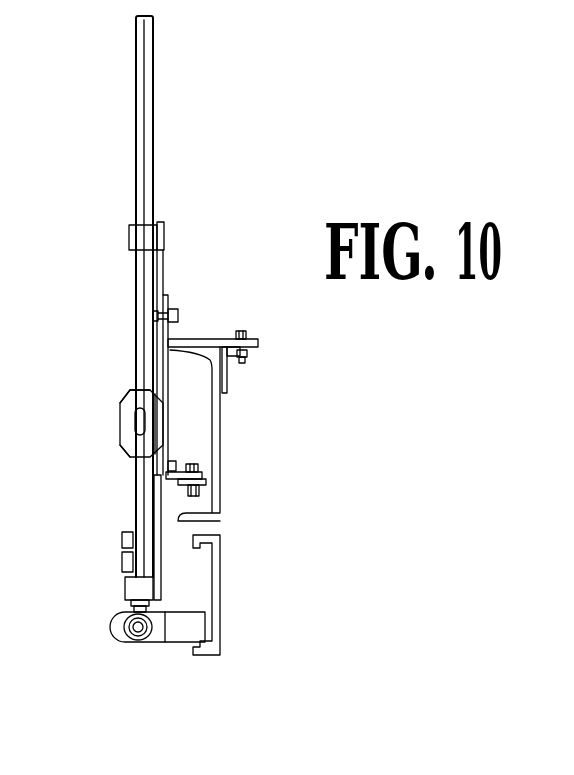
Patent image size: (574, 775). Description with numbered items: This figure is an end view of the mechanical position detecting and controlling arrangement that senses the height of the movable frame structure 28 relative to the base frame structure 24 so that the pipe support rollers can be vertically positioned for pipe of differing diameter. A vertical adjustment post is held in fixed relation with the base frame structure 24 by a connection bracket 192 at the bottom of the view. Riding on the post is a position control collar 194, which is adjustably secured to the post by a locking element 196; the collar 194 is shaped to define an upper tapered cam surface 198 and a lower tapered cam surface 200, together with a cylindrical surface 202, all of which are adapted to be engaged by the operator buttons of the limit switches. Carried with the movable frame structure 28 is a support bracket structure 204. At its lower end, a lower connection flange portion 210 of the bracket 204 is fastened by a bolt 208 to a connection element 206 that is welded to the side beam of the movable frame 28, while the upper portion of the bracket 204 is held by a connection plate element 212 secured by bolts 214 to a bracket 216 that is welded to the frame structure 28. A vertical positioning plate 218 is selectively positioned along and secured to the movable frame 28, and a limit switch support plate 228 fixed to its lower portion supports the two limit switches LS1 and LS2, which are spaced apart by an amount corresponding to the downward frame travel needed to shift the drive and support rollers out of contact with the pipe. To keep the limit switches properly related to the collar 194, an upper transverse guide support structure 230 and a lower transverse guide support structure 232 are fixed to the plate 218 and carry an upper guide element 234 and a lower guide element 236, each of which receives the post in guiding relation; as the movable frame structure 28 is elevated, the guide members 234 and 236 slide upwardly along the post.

The base frame structure 24 is at (221, 566).
The movable frame structure 28 is at (221, 436).
The connection bracket 192 is at (176, 640).
The position control collar 194 is at (120, 437).
The locking element 196 is at (128, 412).
The upper tapered cam surface 198 is at (140, 392).
The lower tapered cam surface 200 is at (126, 454).
The cylindrical surface 202 is at (133, 416).
The support bracket structure 204 is at (169, 304).
The connection element 206 is at (203, 477).
The bolt 208 is at (200, 490).
The lower connection flange portion 210 is at (175, 465).
The connection plate element 212 is at (207, 338).
The bolts 214 is at (246, 334).
The bracket 216 is at (248, 352).
The vertical positioning plate 218 is at (160, 268).
The limit switch support plate 228 is at (152, 523).
The upper transverse guide support structure 230 is at (163, 228).
The lower transverse guide support structure 232 is at (161, 590).
The upper guide element 234 is at (130, 232).
The lower guide element 236 is at (126, 590).
The limit switch LS1 is at (122, 568).
The limit switch LS2 is at (122, 548).